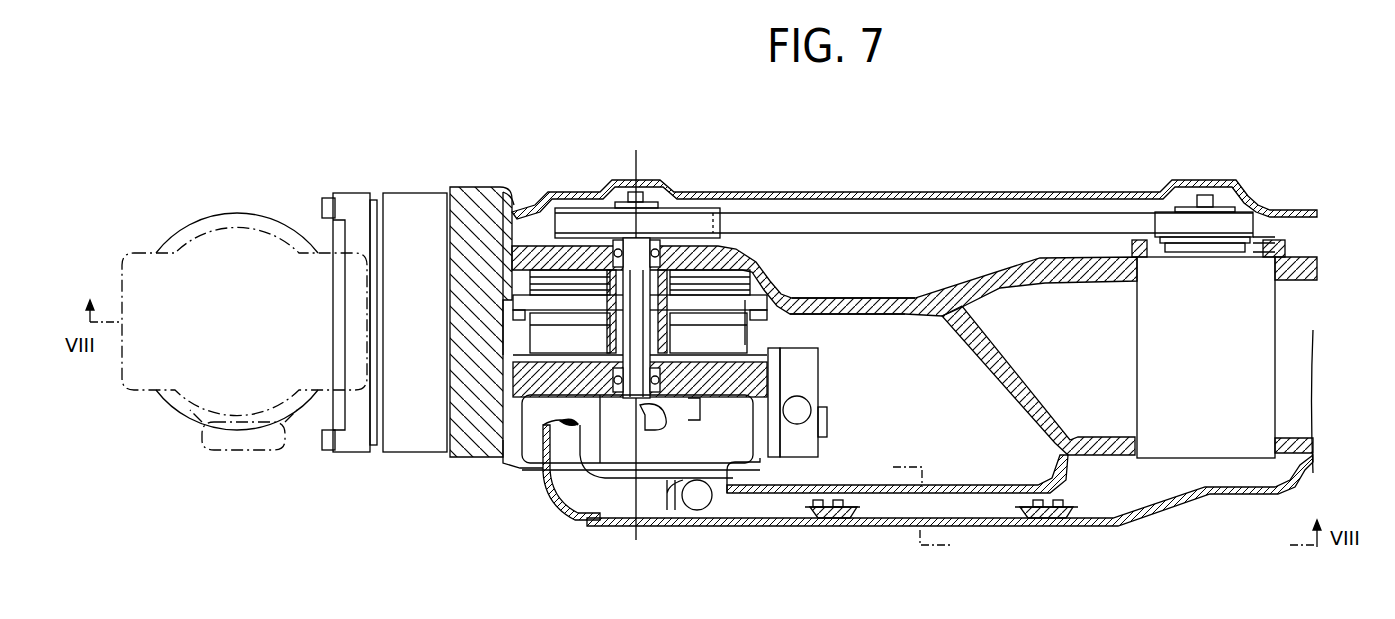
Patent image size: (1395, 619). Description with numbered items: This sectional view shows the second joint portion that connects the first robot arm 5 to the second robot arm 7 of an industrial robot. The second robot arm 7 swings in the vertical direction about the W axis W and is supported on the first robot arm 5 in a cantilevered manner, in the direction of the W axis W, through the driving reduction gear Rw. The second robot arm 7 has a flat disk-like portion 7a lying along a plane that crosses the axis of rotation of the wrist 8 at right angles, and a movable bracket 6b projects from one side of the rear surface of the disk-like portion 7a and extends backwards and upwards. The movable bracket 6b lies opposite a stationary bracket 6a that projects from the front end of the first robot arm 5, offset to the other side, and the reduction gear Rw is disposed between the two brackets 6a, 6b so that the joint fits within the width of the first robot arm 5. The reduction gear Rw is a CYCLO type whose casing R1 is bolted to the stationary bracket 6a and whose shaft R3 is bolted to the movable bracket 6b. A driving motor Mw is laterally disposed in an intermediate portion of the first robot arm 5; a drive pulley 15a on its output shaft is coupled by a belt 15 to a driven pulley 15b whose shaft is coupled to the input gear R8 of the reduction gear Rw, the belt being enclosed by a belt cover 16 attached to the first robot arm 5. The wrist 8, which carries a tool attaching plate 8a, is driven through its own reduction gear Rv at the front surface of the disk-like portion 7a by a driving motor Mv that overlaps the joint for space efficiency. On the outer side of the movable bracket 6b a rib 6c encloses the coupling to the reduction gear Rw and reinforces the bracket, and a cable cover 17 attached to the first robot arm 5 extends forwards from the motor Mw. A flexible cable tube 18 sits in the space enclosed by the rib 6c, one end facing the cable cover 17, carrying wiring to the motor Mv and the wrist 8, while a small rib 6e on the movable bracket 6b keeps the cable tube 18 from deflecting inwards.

The first robot arm 5 is at (1026, 402).
The stationary bracket 6a is at (756, 262).
The movable bracket 6b is at (740, 380).
The rib 6c is at (785, 480).
The small rib 6e is at (690, 410).
The second robot arm 7 is at (516, 190).
The flat disk-like portion 7a is at (478, 186).
The wrist 8 is at (260, 210).
The tool attaching plate 8a is at (140, 257).
The belt 15 is at (983, 222).
The drive pulley 15a is at (1248, 200).
The driven pulley 15b is at (714, 210).
The belt cover 16 is at (904, 190).
The cable cover 17 is at (1030, 524).
The flexible cable tube 18 is at (593, 497).
The driving motor Mv is at (812, 447).
The driving motor Mw is at (1226, 447).
The casing R1 is at (795, 300).
The shaft R3 is at (745, 355).
The input gear R8 is at (600, 342).
The driving reduction gear Rv is at (416, 205).
The driving reduction gear Rw is at (728, 328).
The W axis W is at (637, 150).